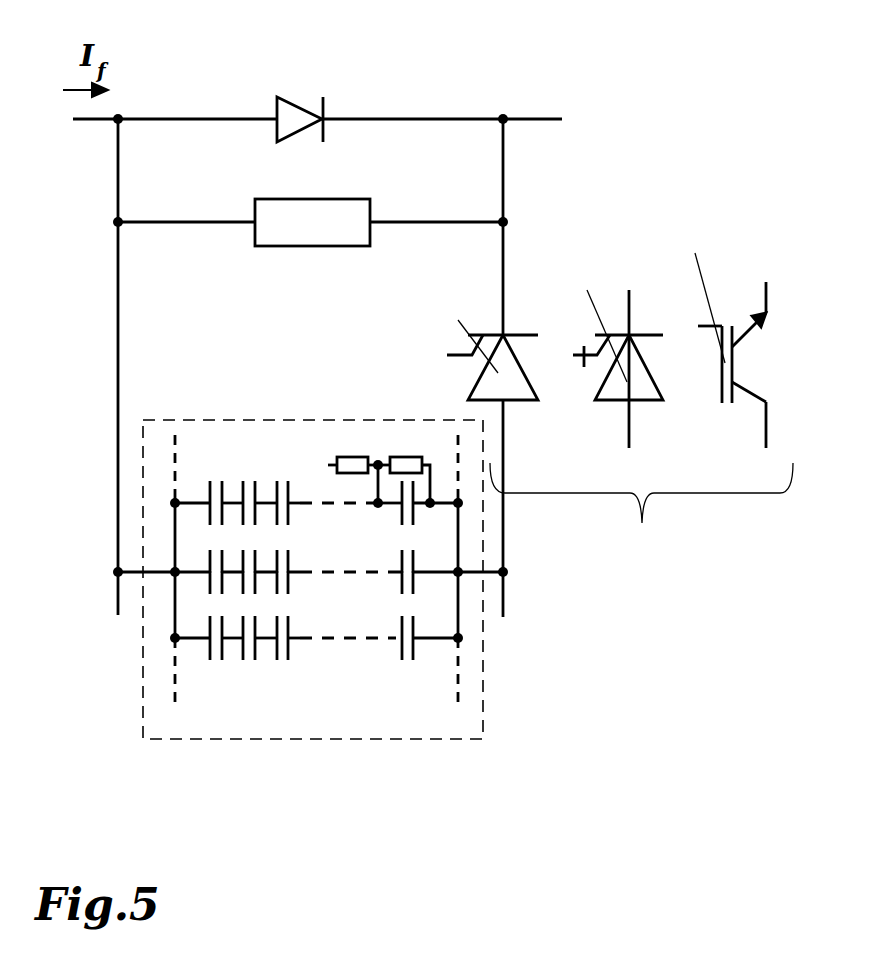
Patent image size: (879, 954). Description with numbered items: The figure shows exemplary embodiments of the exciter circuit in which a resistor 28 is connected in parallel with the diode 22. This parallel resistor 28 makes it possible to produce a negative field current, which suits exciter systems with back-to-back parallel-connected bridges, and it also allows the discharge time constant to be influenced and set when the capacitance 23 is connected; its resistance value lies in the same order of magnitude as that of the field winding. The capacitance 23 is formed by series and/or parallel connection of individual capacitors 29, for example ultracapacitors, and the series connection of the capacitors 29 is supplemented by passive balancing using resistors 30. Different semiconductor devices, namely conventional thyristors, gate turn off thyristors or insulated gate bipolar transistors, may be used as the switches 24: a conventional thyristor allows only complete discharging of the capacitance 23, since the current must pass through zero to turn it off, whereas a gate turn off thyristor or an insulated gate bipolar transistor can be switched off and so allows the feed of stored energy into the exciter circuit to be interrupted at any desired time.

The diode 22 is at (293, 112).
The resistor 28 is at (291, 233).
The switches 24 is at (607, 393).
The capacitance 23 is at (389, 729).
The capacitors 29 is at (212, 652).
The resistors 30 is at (348, 462).